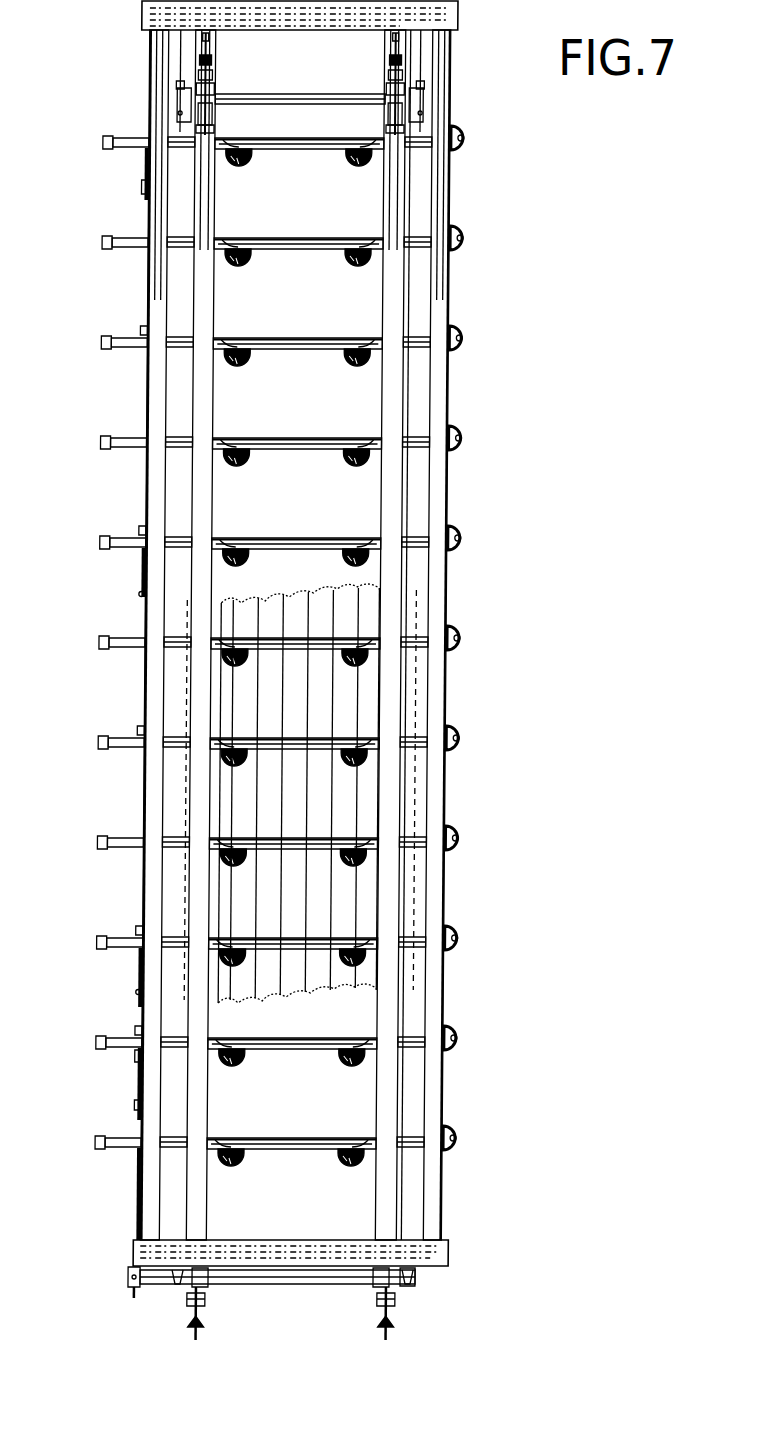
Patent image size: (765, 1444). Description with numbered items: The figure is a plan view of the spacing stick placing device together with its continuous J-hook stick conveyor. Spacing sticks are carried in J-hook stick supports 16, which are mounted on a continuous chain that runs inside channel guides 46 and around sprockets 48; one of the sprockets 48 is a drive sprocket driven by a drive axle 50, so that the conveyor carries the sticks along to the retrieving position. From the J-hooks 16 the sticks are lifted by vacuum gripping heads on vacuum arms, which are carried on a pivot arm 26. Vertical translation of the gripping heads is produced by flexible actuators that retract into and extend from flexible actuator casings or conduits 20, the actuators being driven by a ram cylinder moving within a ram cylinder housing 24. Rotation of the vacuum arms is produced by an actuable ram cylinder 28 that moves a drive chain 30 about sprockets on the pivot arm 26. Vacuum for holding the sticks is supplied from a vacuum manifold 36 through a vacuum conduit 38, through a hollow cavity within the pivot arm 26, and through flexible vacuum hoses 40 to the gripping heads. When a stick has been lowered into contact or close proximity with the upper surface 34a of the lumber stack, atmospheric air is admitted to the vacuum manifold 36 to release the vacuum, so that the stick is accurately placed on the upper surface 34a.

The J-hook stick supports 16 is at (391, 1300).
The flexible actuator casings or conduits 20 is at (333, 1038).
The ram cylinder housing 24 is at (98, 940).
The pivot arm 26 is at (413, 1042).
The actuable ram cylinder 28 is at (137, 1057).
The drive chain 30 is at (137, 1003).
The upper surface of lumber stack 34a is at (296, 798).
The vacuum manifold 36 is at (438, 897).
The vacuum conduit 38 is at (467, 1137).
The flexible vacuum hoses 40 is at (350, 1060).
The channel guides 46 is at (393, 1197).
The sprockets 48 is at (388, 1317).
The drive axle 50 is at (128, 1280).